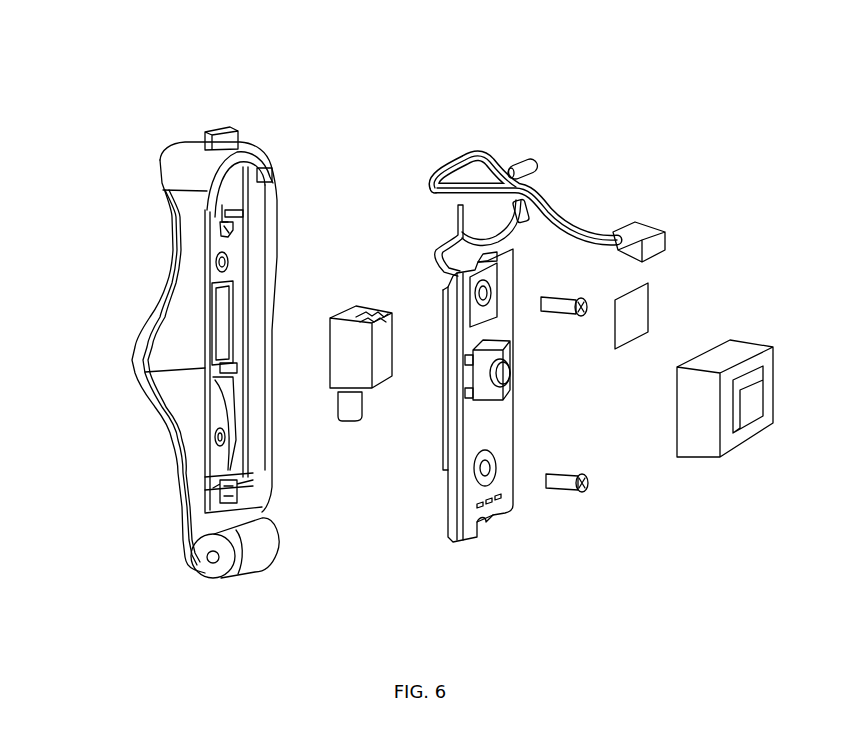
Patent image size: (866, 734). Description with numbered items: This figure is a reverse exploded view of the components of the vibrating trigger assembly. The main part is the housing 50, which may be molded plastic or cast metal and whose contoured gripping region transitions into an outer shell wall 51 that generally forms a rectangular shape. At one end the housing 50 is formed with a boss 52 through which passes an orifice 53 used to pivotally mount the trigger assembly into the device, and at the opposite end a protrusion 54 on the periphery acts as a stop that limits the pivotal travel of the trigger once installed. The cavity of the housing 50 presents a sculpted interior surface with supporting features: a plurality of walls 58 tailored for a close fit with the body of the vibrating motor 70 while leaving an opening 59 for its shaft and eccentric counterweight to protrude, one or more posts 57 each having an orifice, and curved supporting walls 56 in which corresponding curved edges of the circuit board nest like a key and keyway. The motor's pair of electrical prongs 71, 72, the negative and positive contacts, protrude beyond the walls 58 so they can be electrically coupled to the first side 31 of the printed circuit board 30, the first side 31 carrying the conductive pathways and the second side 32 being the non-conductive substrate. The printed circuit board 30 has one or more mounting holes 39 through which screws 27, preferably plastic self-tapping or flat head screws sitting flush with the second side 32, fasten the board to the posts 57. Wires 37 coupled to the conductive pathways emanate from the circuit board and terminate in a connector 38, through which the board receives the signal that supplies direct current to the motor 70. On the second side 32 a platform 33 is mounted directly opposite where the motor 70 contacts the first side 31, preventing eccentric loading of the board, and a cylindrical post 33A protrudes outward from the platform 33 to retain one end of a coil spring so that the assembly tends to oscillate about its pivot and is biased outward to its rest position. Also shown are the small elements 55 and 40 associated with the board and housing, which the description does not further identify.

The screw 27 is at (590, 302).
The printed circuit board 30 is at (488, 408).
The first side 31 is at (450, 512).
The second side 32 is at (492, 470).
The platform 33 is at (512, 352).
The cylindrical post 33A is at (514, 376).
The wires 37 is at (480, 151).
The connector 38 is at (654, 228).
The mounting hole 39 is at (492, 292).
The tab 40 is at (500, 262).
The housing 50 is at (138, 266).
The outer shell wall 51 is at (172, 404).
The boss 52 is at (258, 550).
The orifice 53 is at (210, 563).
The protrusion 54 is at (218, 122).
The bracket 55 is at (240, 212).
The curved supporting wall 56 is at (234, 236).
The post 57 is at (228, 264).
The walls 58 is at (216, 338).
The opening 59 is at (229, 374).
The vibrating motor 70 is at (358, 306).
The electrical prong 71 is at (386, 325).
The electrical prong 72 is at (358, 337).